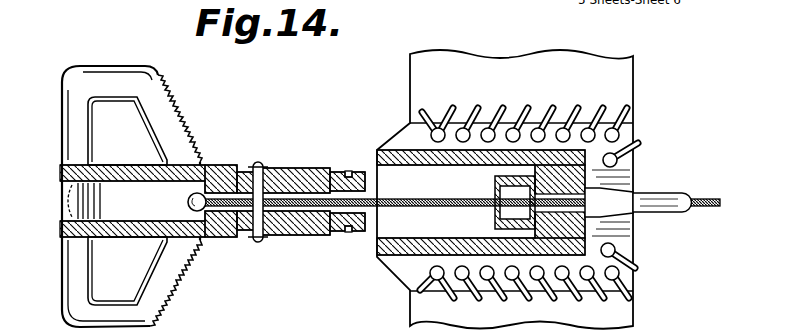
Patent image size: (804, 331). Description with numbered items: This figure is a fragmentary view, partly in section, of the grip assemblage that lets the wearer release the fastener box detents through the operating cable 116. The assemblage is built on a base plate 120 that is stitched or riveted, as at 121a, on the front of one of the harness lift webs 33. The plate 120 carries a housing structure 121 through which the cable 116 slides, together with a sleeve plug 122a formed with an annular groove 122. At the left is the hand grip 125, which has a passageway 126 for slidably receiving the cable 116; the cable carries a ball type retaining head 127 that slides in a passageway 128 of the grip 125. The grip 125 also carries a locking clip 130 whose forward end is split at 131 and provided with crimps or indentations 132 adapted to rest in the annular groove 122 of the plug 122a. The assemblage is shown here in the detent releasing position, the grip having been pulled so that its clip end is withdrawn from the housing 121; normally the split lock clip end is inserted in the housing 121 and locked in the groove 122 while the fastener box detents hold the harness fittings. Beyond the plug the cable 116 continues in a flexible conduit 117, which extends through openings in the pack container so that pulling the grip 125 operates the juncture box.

The left lift web 33 is at (622, 315).
The operating cable 116 is at (404, 206).
The conduit 117 is at (655, 215).
The base plate 120 is at (633, 125).
The housing structure 121 is at (386, 258).
The stitching or rivets 121a is at (558, 112).
The annular groove 122 is at (497, 174).
The sleeve plug 122a is at (630, 173).
The hand grip 125 is at (77, 268).
The passageway 126 is at (287, 168).
The ball type retaining head 127 is at (187, 202).
The passageway 128 is at (188, 162).
The locking clip 130 is at (312, 170).
The split 131 is at (263, 166).
The crimps or indentations 132 is at (348, 170).